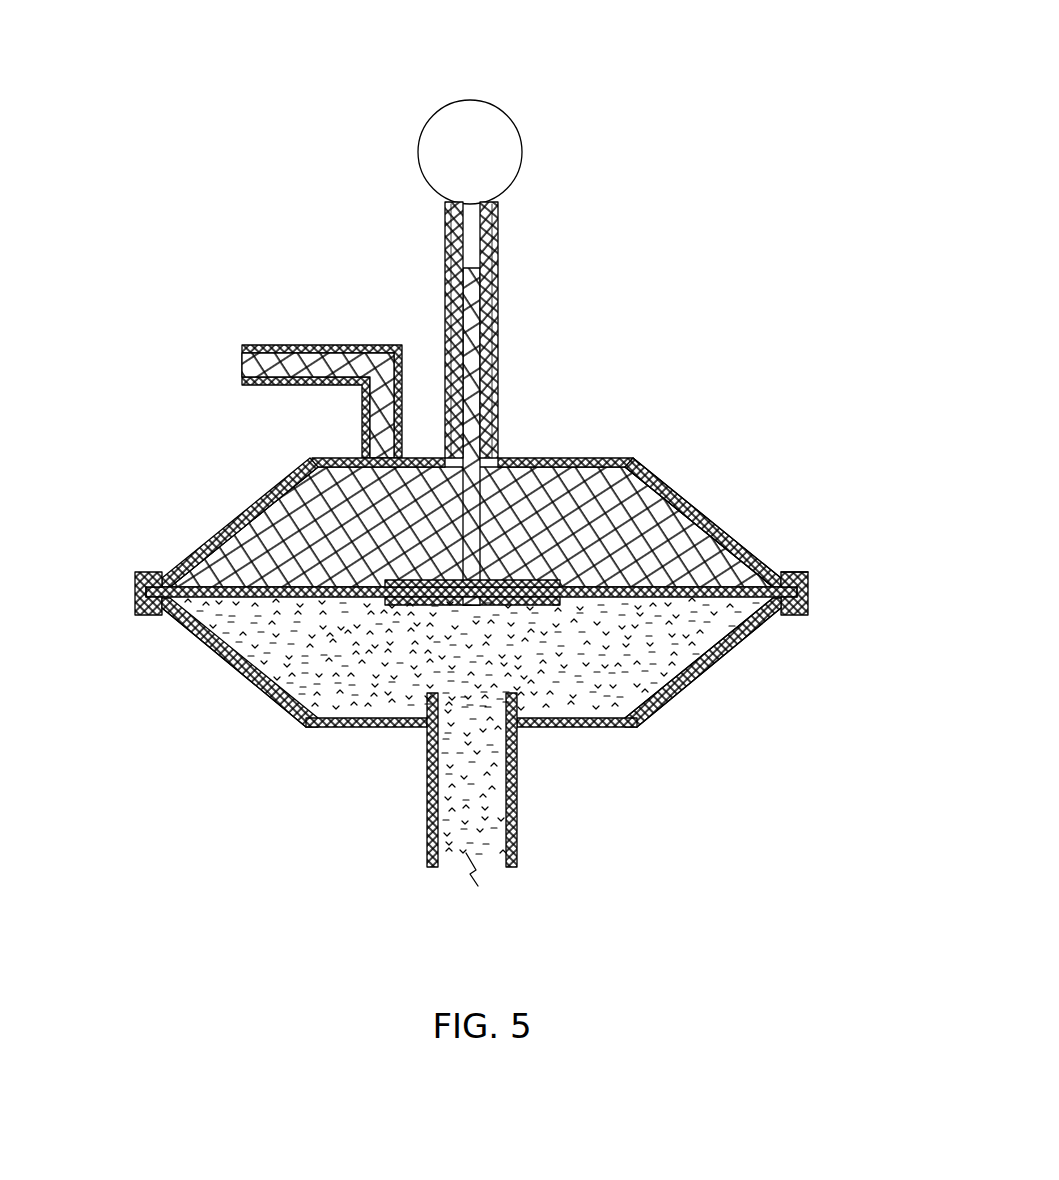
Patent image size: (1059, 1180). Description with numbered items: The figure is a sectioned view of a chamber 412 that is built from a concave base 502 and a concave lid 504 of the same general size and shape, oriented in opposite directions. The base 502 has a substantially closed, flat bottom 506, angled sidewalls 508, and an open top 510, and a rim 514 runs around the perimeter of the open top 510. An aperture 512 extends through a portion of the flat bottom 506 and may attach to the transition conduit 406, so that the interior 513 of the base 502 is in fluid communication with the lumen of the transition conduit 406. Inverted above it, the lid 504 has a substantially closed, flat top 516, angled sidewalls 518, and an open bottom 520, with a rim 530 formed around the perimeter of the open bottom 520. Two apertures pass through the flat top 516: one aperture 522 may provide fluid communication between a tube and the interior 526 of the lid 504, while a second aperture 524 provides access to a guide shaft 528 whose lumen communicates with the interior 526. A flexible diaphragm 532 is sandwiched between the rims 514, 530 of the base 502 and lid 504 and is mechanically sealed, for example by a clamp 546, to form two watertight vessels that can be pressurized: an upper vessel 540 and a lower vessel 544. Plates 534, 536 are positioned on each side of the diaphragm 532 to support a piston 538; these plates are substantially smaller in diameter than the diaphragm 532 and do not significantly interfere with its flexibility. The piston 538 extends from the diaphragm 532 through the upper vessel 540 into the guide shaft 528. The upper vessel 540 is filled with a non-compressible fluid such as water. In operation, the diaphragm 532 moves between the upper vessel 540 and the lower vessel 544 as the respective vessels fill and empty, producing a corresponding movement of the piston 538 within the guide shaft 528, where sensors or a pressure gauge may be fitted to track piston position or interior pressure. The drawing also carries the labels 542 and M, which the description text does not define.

The chamber 412 is at (653, 117).
The transition conduit 406 is at (517, 808).
The concave base 502 is at (703, 672).
The concave lid 504 is at (687, 497).
The flat bottom 506 is at (585, 727).
The angled sidewalls 508 is at (252, 680).
The open top 510 is at (187, 595).
The aperture 512 is at (455, 820).
The interior of the base 513 is at (640, 685).
The rim 514 is at (147, 600).
The flat top 516 is at (623, 483).
The angled sidewalls 518 is at (260, 508).
The open bottom 520 is at (193, 583).
The aperture 522 is at (380, 437).
The second aperture 524 is at (497, 448).
The interior of the lid 526 is at (548, 497).
The guide shaft 528 is at (500, 258).
The rim 530 is at (147, 583).
The flexible diaphragm 532 is at (575, 592).
The plate 534 is at (498, 605).
The plate 536 is at (525, 580).
The piston 538 is at (473, 332).
The upper vessel 540 is at (352, 530).
The corner joint 542 is at (633, 500).
The lower vessel 544 is at (310, 670).
The clamp 546 is at (793, 572).
The material M is at (343, 705).